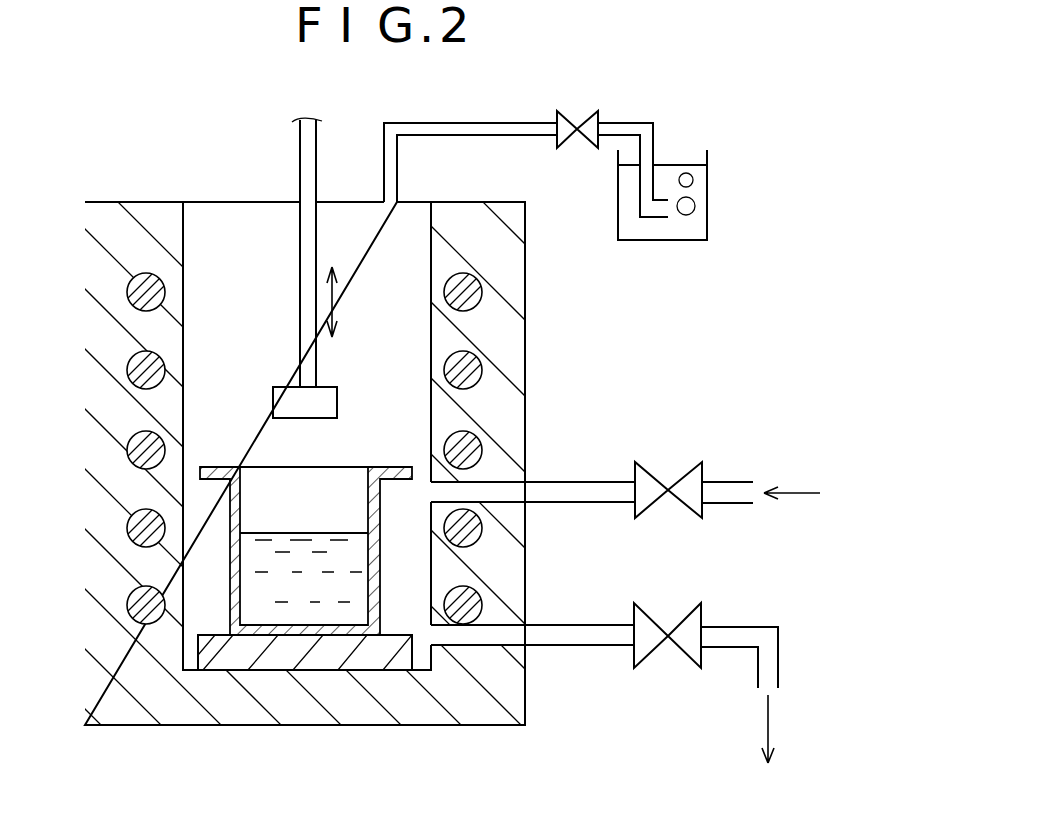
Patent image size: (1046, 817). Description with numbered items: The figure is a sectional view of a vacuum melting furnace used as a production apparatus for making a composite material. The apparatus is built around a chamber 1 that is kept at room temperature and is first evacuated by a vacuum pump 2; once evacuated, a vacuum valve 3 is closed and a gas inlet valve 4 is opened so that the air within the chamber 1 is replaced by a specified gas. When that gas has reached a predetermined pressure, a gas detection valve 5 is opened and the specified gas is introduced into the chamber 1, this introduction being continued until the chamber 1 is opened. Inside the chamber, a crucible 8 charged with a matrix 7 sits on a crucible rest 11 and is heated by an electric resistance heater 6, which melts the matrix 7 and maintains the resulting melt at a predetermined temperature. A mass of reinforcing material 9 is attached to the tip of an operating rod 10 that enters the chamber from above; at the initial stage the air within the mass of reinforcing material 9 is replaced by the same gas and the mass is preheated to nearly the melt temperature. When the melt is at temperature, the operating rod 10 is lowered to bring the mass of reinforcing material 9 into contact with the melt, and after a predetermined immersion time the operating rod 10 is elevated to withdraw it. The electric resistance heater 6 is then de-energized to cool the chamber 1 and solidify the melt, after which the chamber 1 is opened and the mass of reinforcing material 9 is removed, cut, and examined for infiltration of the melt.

The chamber 1 is at (85, 247).
The vacuum pump 2 is at (765, 728).
The vacuum valve 3 is at (666, 632).
The gas inlet valve 4 is at (668, 488).
The gas detection valve 5 is at (576, 148).
The electric resistance heater 6 is at (463, 292).
The matrix 7 is at (258, 596).
The crucible 8 is at (380, 585).
The mass of reinforcing material 9 is at (337, 400).
The operating rod 10 is at (313, 318).
The crucible rest 11 is at (310, 652).